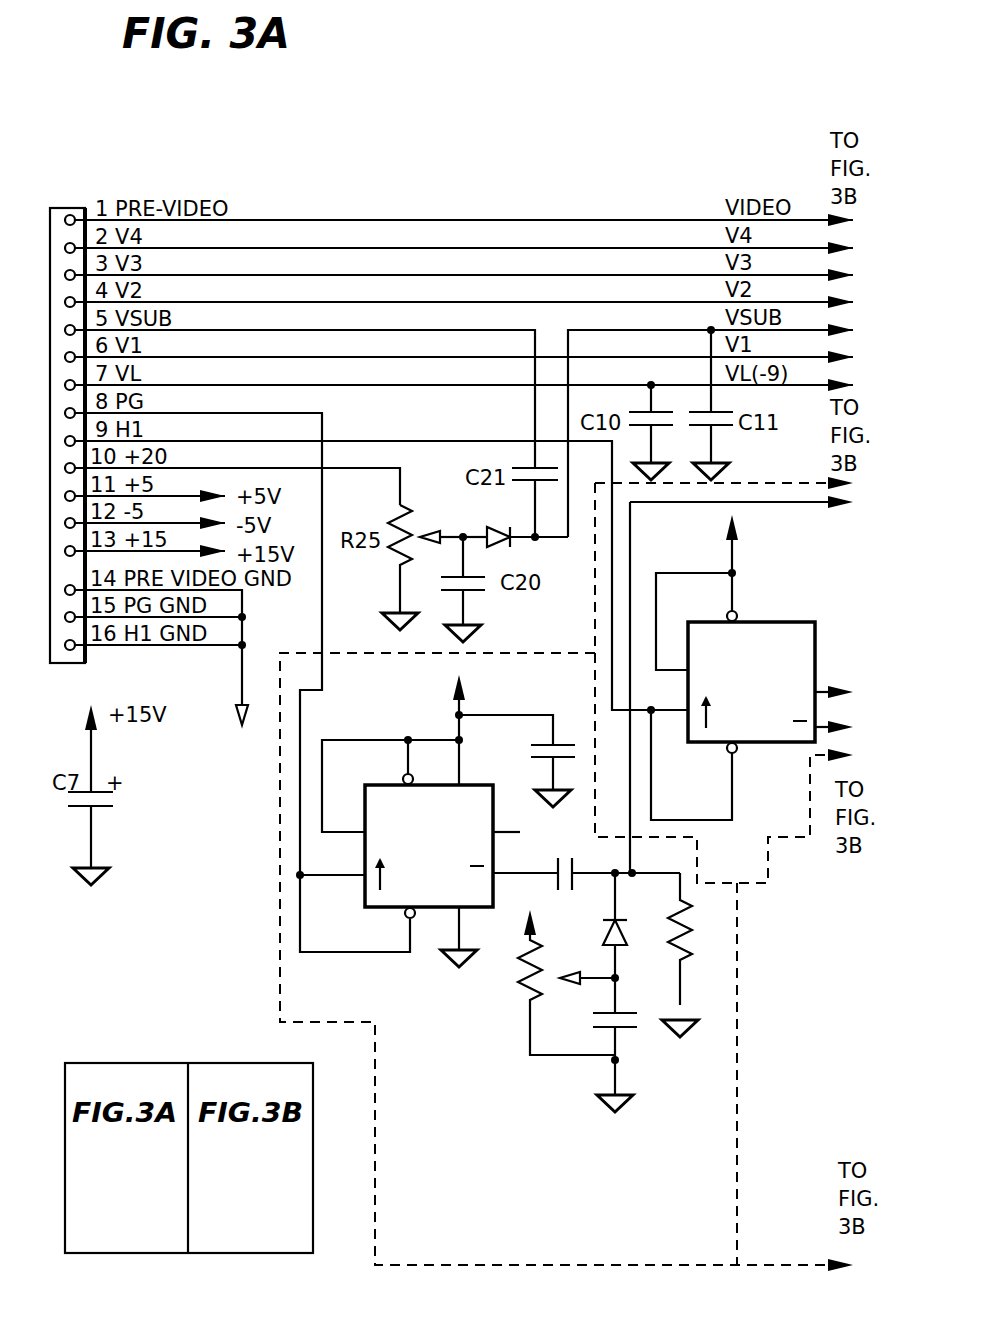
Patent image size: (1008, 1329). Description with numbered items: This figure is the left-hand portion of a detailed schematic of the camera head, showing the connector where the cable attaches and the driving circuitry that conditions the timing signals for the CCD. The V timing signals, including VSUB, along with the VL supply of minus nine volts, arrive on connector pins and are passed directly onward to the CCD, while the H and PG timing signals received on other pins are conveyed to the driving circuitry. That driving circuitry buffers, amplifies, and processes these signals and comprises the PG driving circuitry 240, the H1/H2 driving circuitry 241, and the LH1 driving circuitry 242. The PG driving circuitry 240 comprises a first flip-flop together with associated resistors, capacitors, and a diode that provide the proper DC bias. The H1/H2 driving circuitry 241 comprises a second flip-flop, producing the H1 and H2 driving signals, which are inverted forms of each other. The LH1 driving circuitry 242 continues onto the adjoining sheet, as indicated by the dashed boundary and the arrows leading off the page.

The PG driving circuitry 240 is at (455, 1059).
The H1/H2 driving circuitry 241 is at (856, 572).
The LH1 driving circuitry 242 is at (826, 1045).